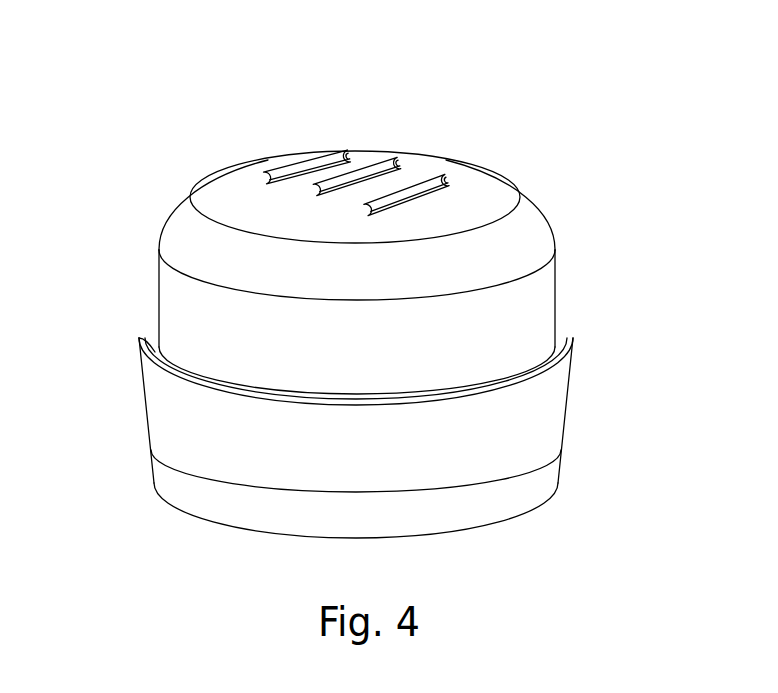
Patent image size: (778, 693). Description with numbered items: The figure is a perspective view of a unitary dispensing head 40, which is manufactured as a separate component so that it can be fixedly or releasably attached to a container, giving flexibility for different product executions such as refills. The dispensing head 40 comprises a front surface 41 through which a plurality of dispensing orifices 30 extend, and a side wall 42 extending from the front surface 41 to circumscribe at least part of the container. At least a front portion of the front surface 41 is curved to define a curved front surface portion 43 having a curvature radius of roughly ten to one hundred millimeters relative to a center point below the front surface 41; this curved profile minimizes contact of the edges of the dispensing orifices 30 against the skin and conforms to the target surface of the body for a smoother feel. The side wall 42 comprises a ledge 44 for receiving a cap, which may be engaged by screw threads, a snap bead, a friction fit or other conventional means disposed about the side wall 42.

The dispensing orifices 30 is at (373, 163).
The unitary dispensing head 40 is at (284, 141).
The front surface 41 is at (224, 193).
The side wall 42 is at (174, 310).
The curved front surface portion 43 is at (192, 240).
The ledge 44 is at (153, 350).